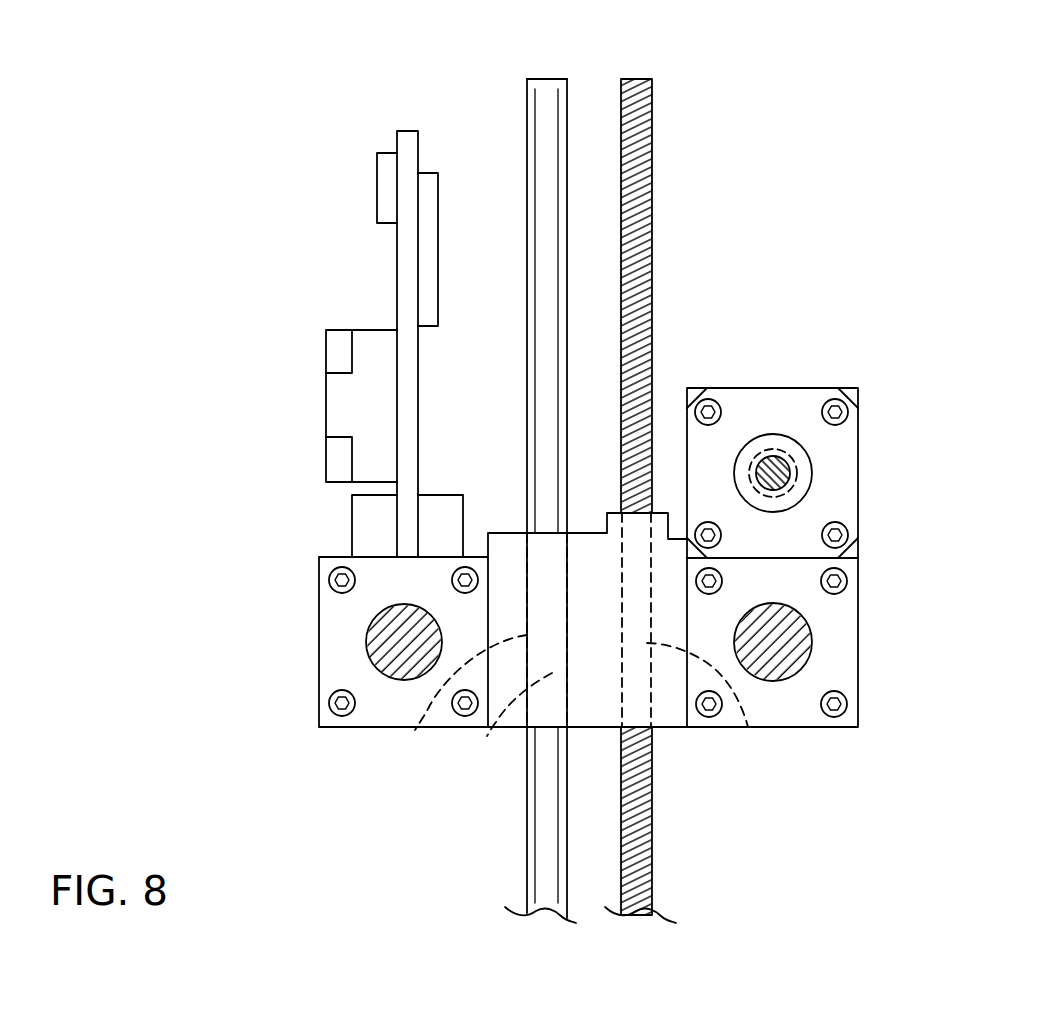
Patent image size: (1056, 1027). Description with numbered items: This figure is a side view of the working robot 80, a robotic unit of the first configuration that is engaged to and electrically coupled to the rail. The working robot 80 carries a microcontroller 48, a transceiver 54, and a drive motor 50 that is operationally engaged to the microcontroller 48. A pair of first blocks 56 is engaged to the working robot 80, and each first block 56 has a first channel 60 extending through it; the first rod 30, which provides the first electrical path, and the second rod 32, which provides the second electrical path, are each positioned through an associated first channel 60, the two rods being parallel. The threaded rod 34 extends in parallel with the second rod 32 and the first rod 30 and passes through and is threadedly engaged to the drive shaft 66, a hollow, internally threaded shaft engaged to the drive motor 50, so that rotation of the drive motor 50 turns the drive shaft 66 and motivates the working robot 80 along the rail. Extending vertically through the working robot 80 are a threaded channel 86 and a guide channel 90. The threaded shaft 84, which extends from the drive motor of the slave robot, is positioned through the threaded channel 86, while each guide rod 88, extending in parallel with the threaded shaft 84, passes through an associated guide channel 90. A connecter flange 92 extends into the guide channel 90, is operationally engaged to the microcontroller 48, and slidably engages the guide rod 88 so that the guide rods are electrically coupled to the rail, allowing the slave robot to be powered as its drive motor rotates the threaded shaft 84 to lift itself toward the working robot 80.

The working robot 80 is at (806, 135).
The guide rod 88 is at (538, 130).
The threaded shaft 84 is at (638, 184).
The transceiver 54 is at (381, 184).
The microcontroller 48 is at (342, 403).
The first block 56 is at (319, 602).
The drive motor 50 is at (770, 437).
The drive shaft 66 is at (795, 461).
The threaded rod 34 is at (782, 484).
The first channel 60 is at (367, 636).
The second rod 32 is at (392, 657).
The first rod 30 is at (786, 652).
The connecter flange 92 is at (415, 730).
The guide channel 90 is at (493, 728).
The threaded channel 86 is at (748, 727).